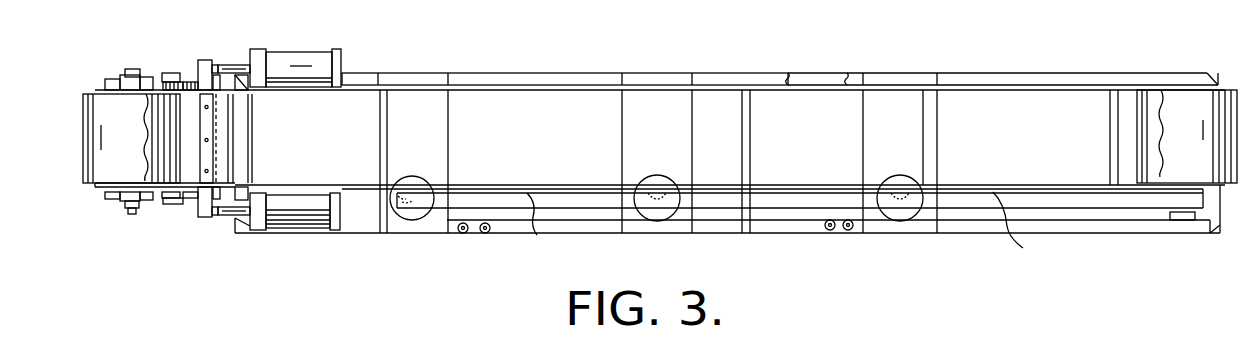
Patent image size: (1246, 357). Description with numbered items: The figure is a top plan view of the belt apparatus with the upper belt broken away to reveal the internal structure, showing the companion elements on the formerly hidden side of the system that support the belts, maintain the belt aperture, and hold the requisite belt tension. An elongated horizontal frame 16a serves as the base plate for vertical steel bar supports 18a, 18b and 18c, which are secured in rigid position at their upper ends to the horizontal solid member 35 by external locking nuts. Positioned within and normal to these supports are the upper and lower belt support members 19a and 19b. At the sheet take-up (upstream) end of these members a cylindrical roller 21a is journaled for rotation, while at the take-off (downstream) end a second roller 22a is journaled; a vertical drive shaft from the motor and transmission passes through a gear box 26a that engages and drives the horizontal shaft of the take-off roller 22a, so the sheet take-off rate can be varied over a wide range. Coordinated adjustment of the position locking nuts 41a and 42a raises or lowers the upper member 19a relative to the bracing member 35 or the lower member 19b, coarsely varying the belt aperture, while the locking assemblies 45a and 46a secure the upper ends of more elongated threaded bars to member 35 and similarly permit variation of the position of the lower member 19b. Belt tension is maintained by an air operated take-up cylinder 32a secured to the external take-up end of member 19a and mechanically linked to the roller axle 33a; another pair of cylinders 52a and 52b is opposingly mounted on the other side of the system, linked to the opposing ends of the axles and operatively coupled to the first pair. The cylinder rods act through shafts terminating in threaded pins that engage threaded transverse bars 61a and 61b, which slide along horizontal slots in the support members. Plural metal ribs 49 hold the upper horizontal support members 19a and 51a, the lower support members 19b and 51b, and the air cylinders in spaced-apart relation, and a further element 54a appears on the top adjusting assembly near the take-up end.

The elongated horizontal frame 16a is at (780, 225).
The vertical steel bar support 18a is at (417, 205).
The vertical steel bar support 18b is at (655, 205).
The vertical steel bar support 18c is at (902, 203).
The upper belt support member 19a is at (537, 235).
The lower belt support member 19b is at (1025, 230).
The cylindrical roller 21a is at (98, 112).
The take-off roller 22a is at (1178, 100).
The gear box 26a is at (1185, 220).
The air operated take-up cylinder 32a is at (288, 220).
The roller axle 33a is at (133, 216).
The horizontal solid member 35 is at (565, 203).
The position locking nut 41a is at (463, 222).
The position locking nut 42a is at (827, 219).
The locking assembly 45a is at (488, 222).
The locking assembly 46a is at (848, 219).
The metal rib 49 is at (385, 116).
The upper horizontal support member 51a is at (552, 85).
The lower support member 51b is at (827, 70).
The take-up cylinder 52a is at (307, 62).
The take-up cylinder 52b is at (280, 47).
The upper adjusting mechanism 54a is at (137, 69).
The threaded transverse bar 61a is at (208, 217).
The threaded transverse bar 61b is at (203, 61).